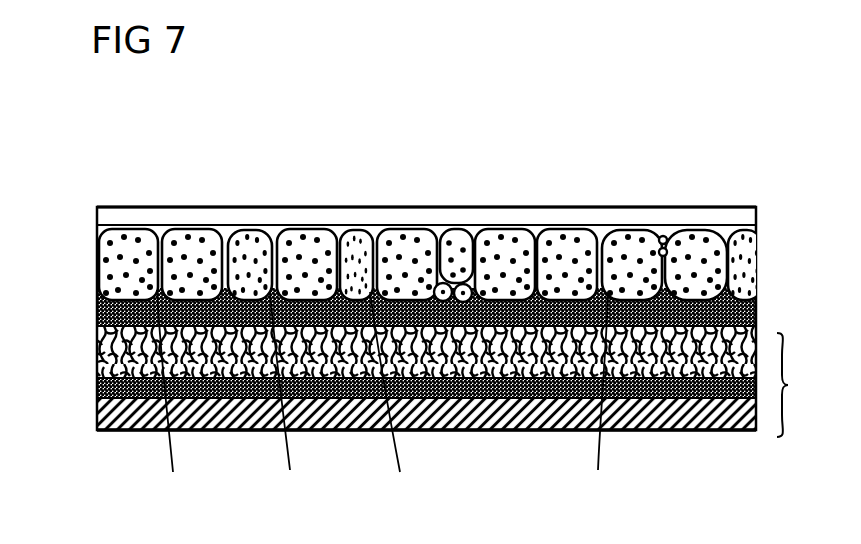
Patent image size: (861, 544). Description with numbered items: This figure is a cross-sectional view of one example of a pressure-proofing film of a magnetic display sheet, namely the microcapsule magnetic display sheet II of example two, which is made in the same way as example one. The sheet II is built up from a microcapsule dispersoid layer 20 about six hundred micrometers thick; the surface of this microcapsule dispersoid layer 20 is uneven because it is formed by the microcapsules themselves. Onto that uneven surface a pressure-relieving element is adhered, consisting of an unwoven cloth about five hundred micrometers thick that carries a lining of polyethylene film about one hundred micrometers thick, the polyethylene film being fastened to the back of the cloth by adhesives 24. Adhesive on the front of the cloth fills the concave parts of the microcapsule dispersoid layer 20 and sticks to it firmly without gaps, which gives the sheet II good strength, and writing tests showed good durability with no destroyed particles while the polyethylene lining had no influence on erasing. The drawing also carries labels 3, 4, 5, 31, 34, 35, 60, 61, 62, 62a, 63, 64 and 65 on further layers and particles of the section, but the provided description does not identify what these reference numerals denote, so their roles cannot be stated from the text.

The glass beads 3 is at (270, 300).
The particles in bead 4 is at (128, 245).
The binder resin 5 is at (184, 243).
The microcapsule dispersoid layer 20 is at (760, 256).
The adhesives 24 is at (522, 207).
The interface line 31 is at (212, 227).
The small bead 34 is at (462, 240).
The fine beads 35 is at (430, 297).
The base laminate 60 is at (804, 385).
The top transparent film 61 is at (97, 232).
The bead holding layer 62 is at (760, 316).
The slit lines 62a is at (383, 403).
The fibrous intermediate layer 63 is at (97, 351).
The adhesive layer 64 is at (97, 391).
The substrate 65 is at (713, 422).
The microcapsule magnetic display sheet II is at (716, 200).